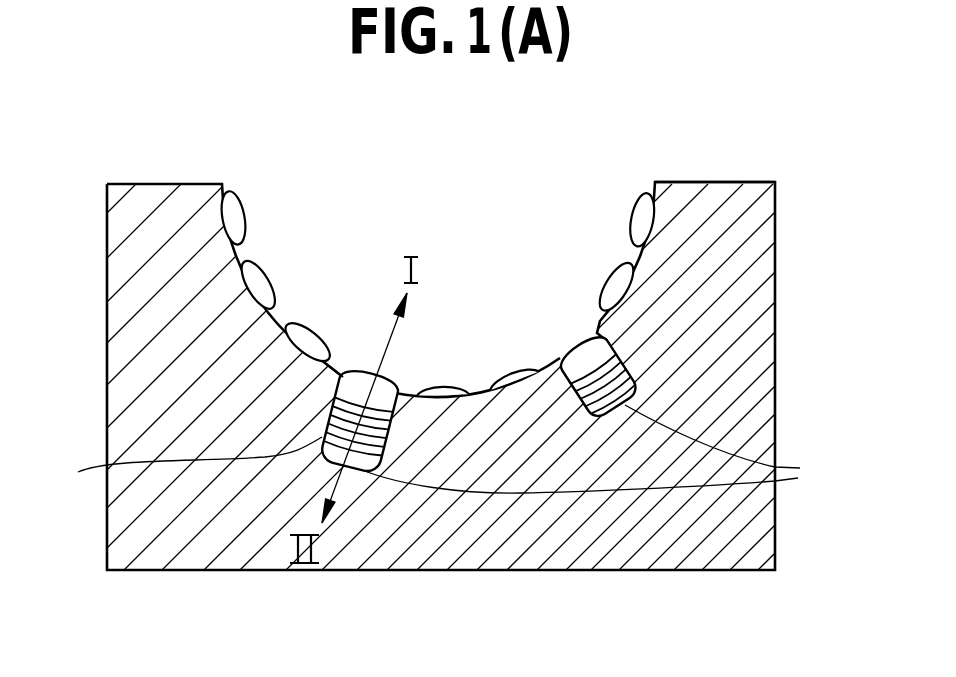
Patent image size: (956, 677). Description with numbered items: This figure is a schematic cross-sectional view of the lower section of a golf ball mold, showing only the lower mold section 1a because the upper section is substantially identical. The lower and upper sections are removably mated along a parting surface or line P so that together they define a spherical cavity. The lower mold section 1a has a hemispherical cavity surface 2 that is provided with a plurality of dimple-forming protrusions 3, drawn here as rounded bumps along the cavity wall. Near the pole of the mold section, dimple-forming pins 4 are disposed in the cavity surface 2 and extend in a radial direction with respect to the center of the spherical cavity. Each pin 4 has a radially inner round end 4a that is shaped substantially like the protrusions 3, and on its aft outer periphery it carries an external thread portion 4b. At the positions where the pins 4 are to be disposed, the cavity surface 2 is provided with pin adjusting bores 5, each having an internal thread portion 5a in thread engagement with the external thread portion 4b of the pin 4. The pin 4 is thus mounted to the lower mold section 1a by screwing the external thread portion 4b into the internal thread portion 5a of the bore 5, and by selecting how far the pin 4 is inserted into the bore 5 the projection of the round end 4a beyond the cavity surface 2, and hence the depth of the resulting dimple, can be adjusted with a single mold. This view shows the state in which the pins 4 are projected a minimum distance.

The lower mold section 1a is at (757, 357).
The cavity surface 2 is at (638, 255).
The dimple-forming protrusions 3 is at (267, 283).
The dimple-forming pin 4 is at (592, 449).
The radially inner round end 4a is at (362, 377).
The external thread portion 4b is at (182, 463).
The pin adjusting bore 5 is at (323, 462).
The internal thread portion 5a is at (397, 388).
The parting surface or line P is at (697, 182).